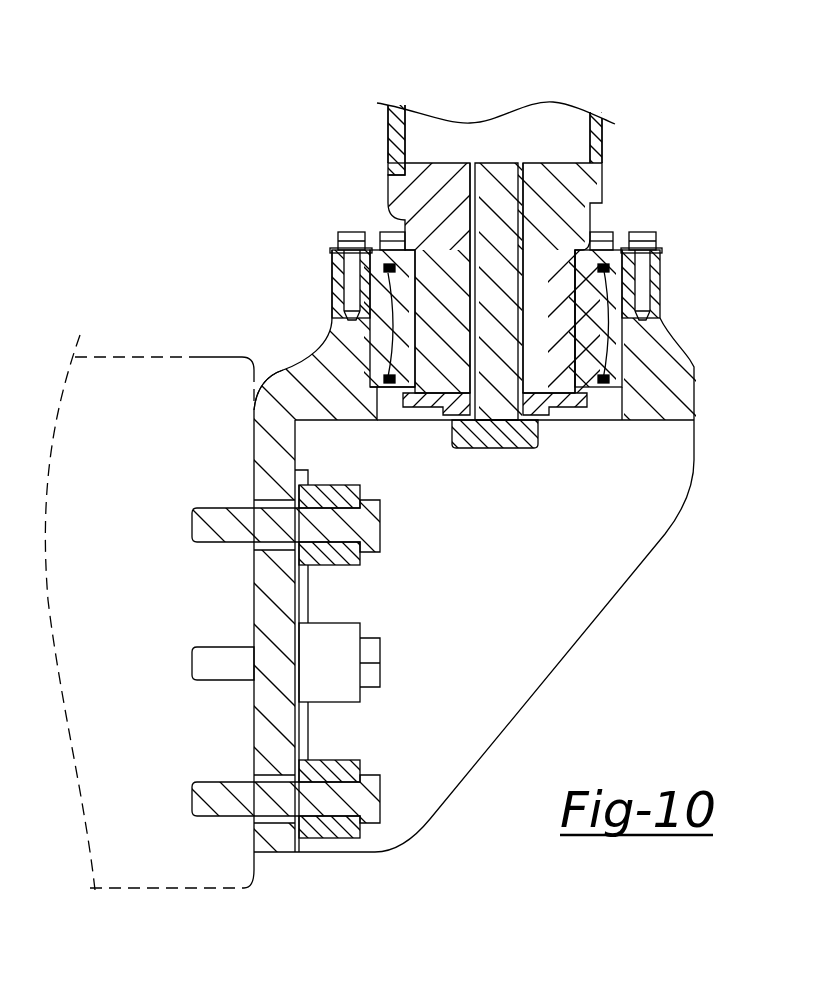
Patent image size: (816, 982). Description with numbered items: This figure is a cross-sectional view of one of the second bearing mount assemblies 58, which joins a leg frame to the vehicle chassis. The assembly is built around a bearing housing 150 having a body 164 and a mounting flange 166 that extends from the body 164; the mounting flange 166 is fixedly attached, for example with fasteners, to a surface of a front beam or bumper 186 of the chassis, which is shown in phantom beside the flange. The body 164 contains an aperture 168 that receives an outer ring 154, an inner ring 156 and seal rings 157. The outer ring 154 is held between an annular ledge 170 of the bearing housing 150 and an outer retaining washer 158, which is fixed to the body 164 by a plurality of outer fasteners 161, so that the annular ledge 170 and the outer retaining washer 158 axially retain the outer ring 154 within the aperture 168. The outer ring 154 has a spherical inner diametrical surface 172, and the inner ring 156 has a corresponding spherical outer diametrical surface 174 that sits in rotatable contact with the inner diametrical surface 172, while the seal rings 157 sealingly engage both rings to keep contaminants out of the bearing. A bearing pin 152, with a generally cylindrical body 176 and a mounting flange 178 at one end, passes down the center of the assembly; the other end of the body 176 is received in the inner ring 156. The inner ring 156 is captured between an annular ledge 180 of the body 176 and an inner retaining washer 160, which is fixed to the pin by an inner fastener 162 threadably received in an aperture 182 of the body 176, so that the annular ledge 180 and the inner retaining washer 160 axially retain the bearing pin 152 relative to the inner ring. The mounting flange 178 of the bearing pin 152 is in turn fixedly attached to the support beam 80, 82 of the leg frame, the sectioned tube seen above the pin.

The second bearing mount assembly 58 is at (318, 265).
The first support beam 80 is at (396, 135).
The second support beam 82 is at (396, 135).
The bearing housing 150 is at (699, 388).
The bearing pin 152 is at (606, 181).
The outer ring 154 is at (611, 376).
The inner ring 156 is at (594, 345).
The seal rings 157 is at (606, 271).
The outer retaining washer 158 is at (658, 257).
The inner retaining washer 160 is at (578, 376).
The outer fasteners 161 is at (641, 231).
The inner fastener 162 is at (498, 434).
The body 164 is at (660, 306).
The mounting flange 166 is at (285, 597).
The aperture 168 is at (368, 352).
The annular ledge 170 is at (367, 388).
The inner diametrical surface 172 is at (436, 394).
The outer diametrical surface 174 is at (397, 388).
The cylindrical body 176 is at (542, 392).
The mounting flange 178 is at (398, 185).
The annular ledge 180 is at (386, 376).
The aperture 182 is at (523, 212).
The front beam or bumper 186 is at (130, 355).